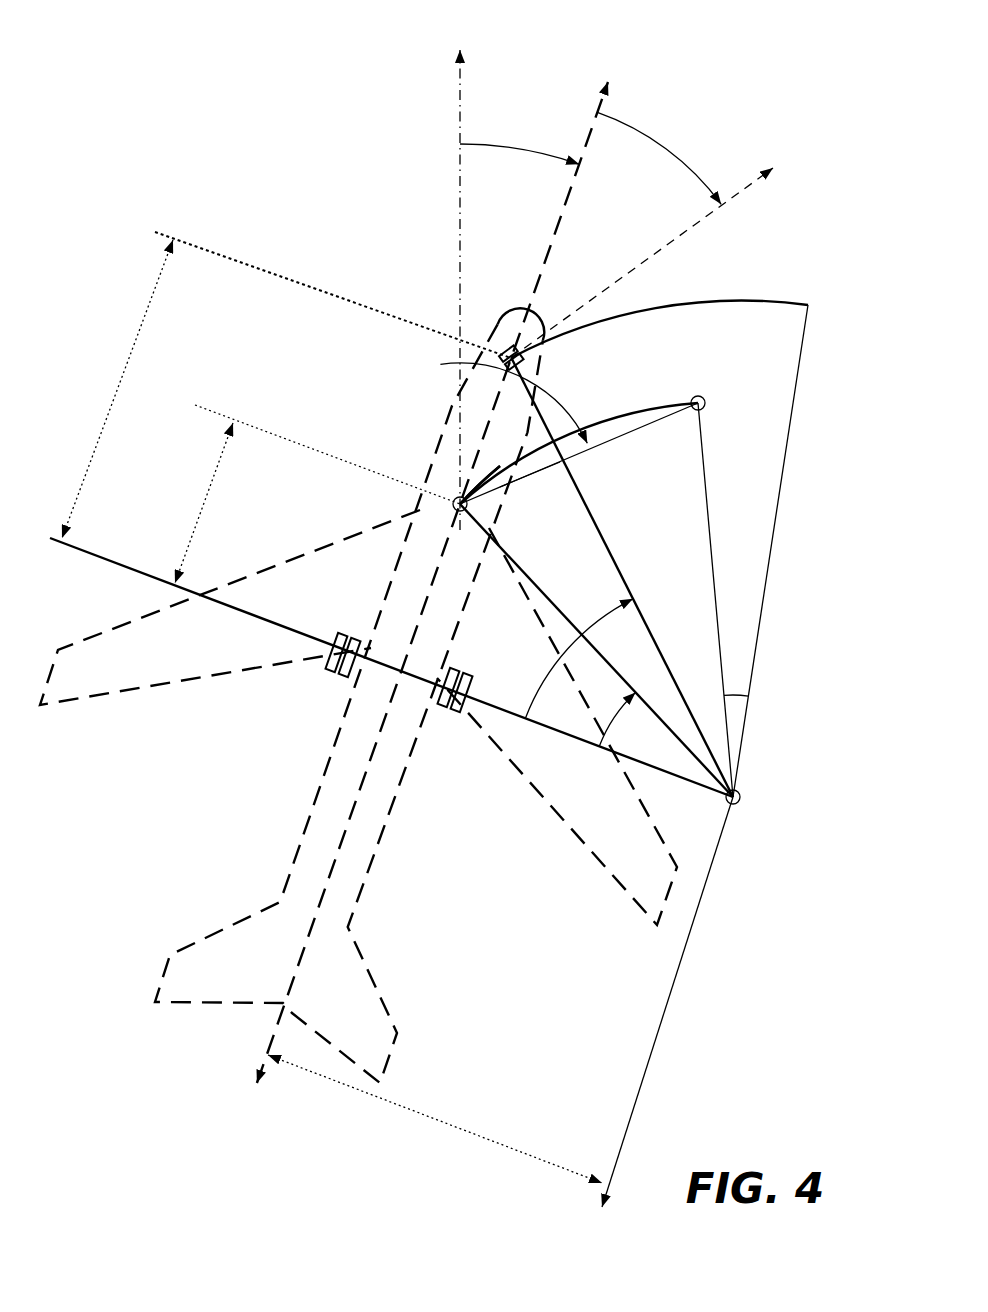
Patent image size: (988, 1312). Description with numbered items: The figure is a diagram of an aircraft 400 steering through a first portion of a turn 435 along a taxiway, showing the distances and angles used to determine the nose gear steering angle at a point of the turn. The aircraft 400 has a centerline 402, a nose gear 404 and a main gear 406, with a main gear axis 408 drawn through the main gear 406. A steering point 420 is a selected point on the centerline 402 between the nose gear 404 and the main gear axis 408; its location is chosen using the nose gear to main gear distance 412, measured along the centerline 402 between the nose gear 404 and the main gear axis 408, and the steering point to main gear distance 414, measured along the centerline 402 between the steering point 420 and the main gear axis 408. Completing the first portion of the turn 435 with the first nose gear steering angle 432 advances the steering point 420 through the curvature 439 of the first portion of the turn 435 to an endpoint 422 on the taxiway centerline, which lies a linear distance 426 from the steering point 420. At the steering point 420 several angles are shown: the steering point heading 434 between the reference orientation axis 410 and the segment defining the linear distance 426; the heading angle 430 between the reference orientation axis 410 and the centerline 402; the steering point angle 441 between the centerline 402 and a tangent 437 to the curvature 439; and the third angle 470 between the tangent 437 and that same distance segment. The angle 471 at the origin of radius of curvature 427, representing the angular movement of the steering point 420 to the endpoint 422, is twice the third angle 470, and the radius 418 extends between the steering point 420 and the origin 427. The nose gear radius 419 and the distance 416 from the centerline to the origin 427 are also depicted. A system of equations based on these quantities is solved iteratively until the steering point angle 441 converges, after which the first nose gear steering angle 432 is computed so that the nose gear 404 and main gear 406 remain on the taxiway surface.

The aircraft 400 is at (86, 90).
The centerline 402 is at (427, 604).
The nose gear 404 is at (505, 350).
The main gear 406 is at (447, 667).
The main gear axis 408 is at (290, 630).
The reference orientation axis 410 is at (458, 122).
The nose gear to main gear distance W35 412 is at (115, 388).
The steering point to main gear distance W34 414 is at (182, 553).
The distance from centerline to origin of radius of curvature of first portion R30 416 is at (517, 1148).
The radius R31 418 is at (497, 546).
The nose gear radius R32 419 is at (572, 472).
The steering point P41 420 is at (452, 508).
The endpoint 422 is at (706, 401).
The linear distance D33 426 is at (643, 426).
The origin of radius of curvature P40 427 is at (740, 804).
The heading angle A22 430 is at (580, 777).
The first nose gear steering angle A24 432 is at (478, 752).
The steering point heading A23 434 is at (552, 385).
The first portion of a turn 435 is at (673, 397).
The tangent 437 is at (497, 463).
The curvature of first portion of the turn 439 is at (704, 410).
The angle A20 441 is at (505, 447).
The third angle A21 470 is at (548, 457).
The angle 2×A21 471 is at (724, 695).